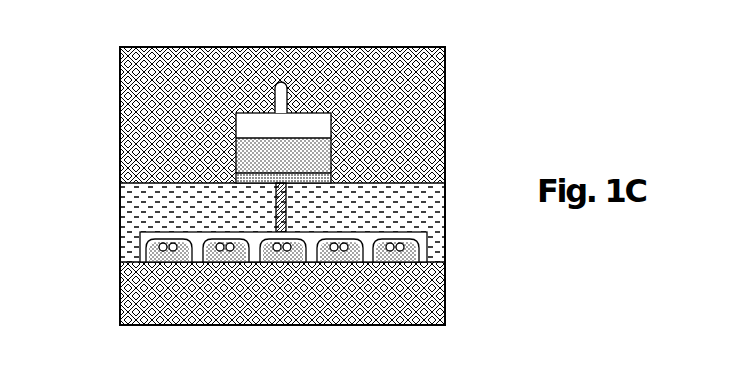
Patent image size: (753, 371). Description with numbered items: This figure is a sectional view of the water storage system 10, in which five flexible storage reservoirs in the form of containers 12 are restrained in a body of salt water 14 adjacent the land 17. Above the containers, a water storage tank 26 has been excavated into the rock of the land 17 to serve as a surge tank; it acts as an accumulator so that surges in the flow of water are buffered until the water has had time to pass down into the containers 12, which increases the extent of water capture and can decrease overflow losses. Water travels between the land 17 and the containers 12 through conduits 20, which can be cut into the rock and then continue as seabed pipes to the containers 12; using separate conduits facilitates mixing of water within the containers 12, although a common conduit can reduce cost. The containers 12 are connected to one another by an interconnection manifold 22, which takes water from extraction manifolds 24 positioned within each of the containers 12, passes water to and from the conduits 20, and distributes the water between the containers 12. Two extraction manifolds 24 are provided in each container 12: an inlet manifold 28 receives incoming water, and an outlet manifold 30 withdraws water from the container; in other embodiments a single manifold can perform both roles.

The water storage system 10 is at (488, 61).
The containers 12 is at (262, 235).
The body of salt water 14 is at (336, 217).
The land 17 is at (203, 106).
The conduits 20 is at (277, 207).
The interconnection manifold 22 is at (197, 264).
The extraction manifolds 24 is at (401, 248).
The water storage tank 26 is at (332, 142).
The inlet manifold 28 is at (424, 258).
The outlet manifold 30 is at (380, 252).